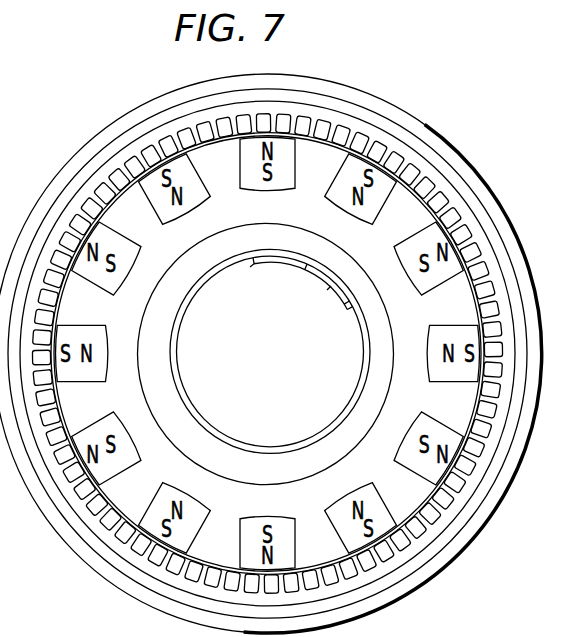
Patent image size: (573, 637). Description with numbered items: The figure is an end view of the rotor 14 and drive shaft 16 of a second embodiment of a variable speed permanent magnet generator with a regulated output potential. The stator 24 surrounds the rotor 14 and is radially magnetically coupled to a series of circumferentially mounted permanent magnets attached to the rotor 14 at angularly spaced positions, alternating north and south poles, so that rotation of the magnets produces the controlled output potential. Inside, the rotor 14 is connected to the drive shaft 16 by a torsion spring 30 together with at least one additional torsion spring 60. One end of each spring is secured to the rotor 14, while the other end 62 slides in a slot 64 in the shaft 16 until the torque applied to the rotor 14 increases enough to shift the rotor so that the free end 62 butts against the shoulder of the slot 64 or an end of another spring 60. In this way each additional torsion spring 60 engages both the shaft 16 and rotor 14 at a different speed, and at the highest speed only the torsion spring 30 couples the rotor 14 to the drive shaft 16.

The rotor 14 is at (66, 548).
The stator 24 is at (428, 543).
The drive shaft 16 is at (253, 367).
The torsion spring 30 is at (253, 266).
The additional torsion spring 60 is at (302, 268).
The other end 62 is at (288, 270).
The slot 64 is at (327, 290).